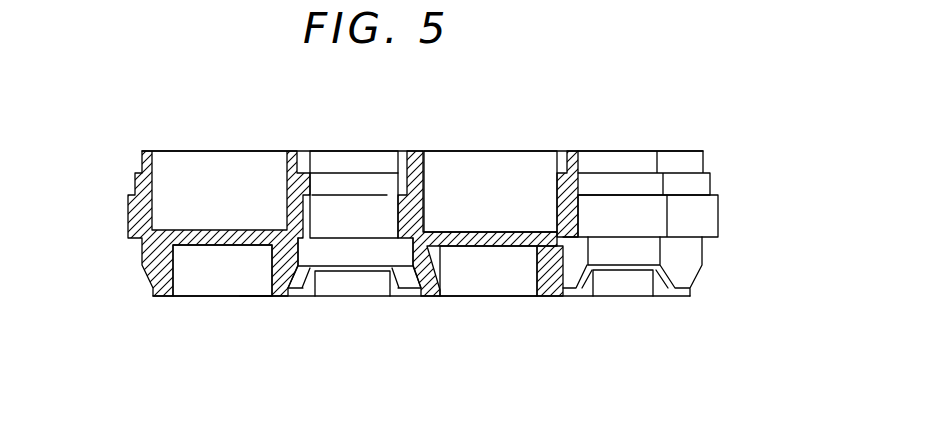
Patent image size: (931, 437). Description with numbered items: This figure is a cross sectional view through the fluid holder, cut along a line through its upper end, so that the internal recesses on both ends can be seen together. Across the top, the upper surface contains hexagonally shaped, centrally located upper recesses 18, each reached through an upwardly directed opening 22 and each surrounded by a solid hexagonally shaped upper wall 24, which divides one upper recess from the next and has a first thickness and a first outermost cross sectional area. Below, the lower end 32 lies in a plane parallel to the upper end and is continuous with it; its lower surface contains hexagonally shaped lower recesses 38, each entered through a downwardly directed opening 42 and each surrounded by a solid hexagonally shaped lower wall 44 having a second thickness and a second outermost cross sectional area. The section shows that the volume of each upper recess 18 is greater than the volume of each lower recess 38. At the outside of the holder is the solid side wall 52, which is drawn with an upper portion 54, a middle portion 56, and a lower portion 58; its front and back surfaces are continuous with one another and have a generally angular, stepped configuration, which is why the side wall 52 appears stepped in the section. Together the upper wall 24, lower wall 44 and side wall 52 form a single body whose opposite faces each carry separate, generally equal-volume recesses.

The upper recesses 18 is at (502, 201).
The opening 22 is at (497, 151).
The upper wall 24 is at (405, 158).
The lower end 32 is at (214, 300).
The lower recesses 38 is at (237, 282).
The opening 42 is at (256, 294).
The lower wall 44 is at (627, 283).
The side wall 52 is at (126, 218).
The upper portion 54 is at (718, 176).
The middle portion 56 is at (726, 216).
The lower portion 58 is at (692, 260).